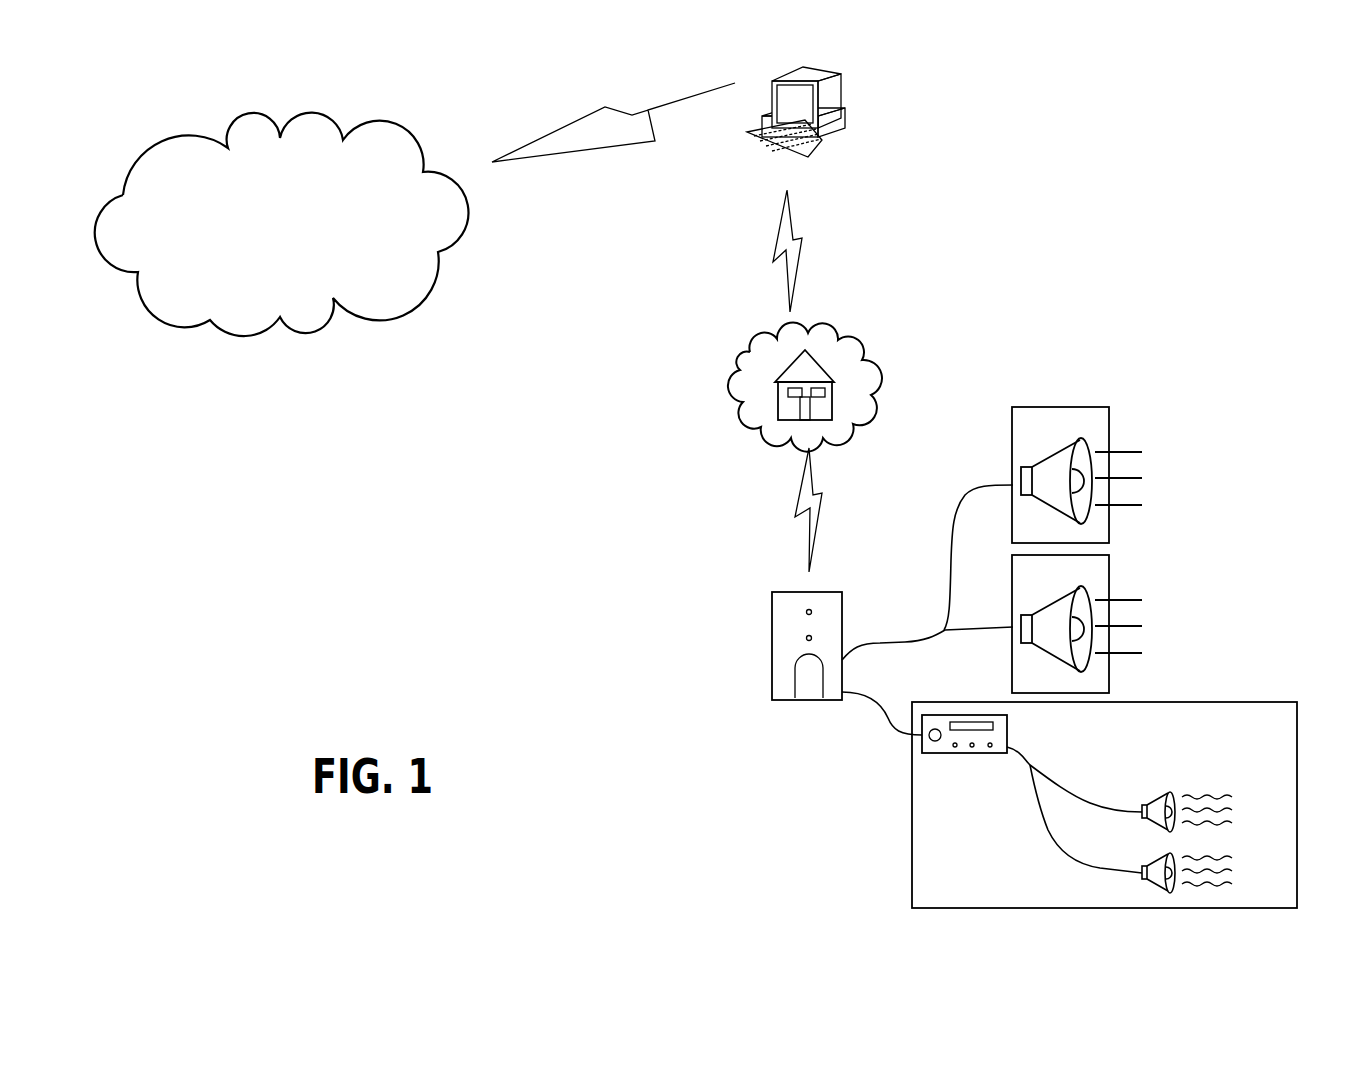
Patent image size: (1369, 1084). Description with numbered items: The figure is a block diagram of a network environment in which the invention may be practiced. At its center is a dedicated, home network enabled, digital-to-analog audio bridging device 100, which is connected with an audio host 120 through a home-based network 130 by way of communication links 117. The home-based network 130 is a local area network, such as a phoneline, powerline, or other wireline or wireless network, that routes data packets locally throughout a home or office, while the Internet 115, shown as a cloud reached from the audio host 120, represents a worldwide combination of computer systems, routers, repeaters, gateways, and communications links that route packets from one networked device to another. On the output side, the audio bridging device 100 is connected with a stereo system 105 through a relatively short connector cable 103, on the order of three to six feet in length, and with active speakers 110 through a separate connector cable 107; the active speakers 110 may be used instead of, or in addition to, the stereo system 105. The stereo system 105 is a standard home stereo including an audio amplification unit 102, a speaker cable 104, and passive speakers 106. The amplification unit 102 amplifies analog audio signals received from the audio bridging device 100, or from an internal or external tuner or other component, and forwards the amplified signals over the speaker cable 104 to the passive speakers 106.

The audio bridging device 100 is at (770, 657).
The audio amplification unit 102 is at (1007, 730).
The connector cable 103 is at (889, 737).
The speaker cable 104 is at (1037, 801).
The stereo system 105 is at (900, 830).
The passive speakers 106 is at (1142, 857).
The connector cable 107 is at (910, 643).
The active speakers 110 is at (1109, 422).
The Internet 115 is at (380, 310).
The communication links 117 is at (800, 252).
The audio host 120 is at (845, 118).
The home-based network 130 is at (863, 352).